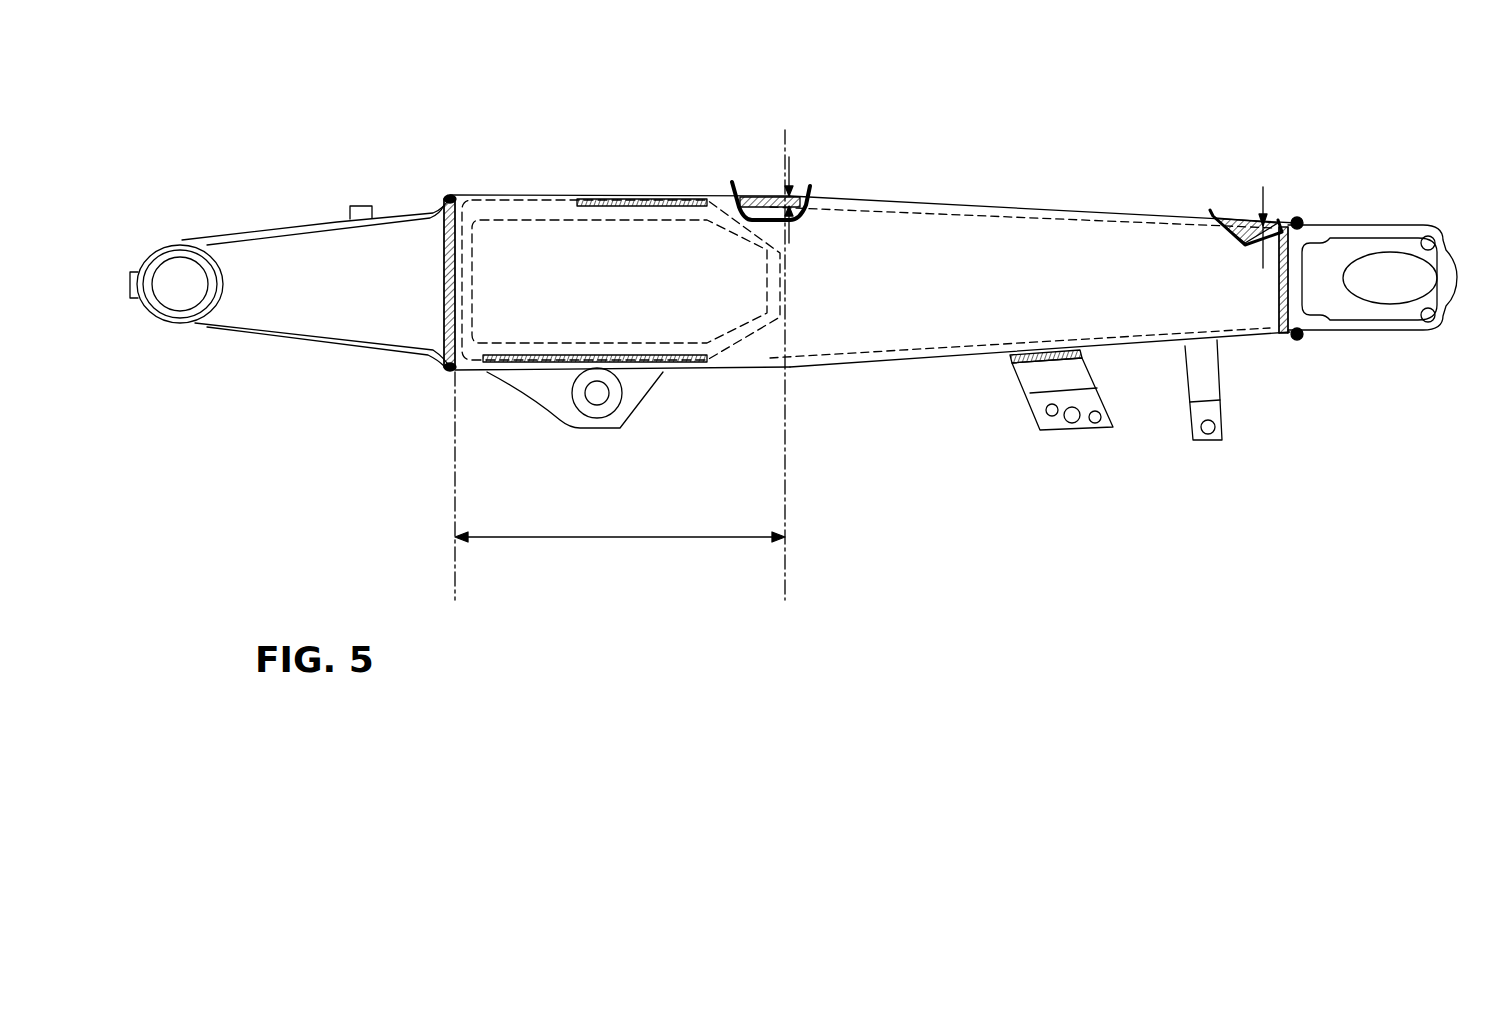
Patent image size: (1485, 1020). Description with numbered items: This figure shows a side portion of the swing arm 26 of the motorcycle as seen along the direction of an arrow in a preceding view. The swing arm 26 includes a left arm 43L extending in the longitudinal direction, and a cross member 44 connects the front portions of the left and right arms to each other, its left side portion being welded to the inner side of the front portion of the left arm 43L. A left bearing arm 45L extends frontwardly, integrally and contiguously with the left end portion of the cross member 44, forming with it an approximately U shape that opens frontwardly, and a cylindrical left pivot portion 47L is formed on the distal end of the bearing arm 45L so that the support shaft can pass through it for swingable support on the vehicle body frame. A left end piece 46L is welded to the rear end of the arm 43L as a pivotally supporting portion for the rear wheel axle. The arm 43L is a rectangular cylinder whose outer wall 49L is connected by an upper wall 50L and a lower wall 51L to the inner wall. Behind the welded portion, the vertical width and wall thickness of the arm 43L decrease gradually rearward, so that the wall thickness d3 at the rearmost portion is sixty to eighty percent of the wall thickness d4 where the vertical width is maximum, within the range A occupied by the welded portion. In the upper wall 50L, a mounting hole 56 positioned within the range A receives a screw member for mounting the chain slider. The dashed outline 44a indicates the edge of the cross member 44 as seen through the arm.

The swing arm 26 is at (523, 183).
The left arm 43L is at (892, 190).
The cross member 44 is at (790, 283).
The edge of recessed portion 44a is at (602, 195).
The left bearing arm 45L is at (327, 347).
The left end piece 46L is at (1347, 233).
The left pivot portion 47L is at (180, 240).
The left outer wall 49L is at (837, 348).
The left upper wall 50L is at (990, 205).
The left lower wall 51L is at (930, 367).
The mounting hole 56 is at (760, 200).
The wall thickness of rearmost portions d3 is at (1262, 227).
The wall thickness at maximum vertical width d4 is at (800, 190).
The range A is at (605, 537).